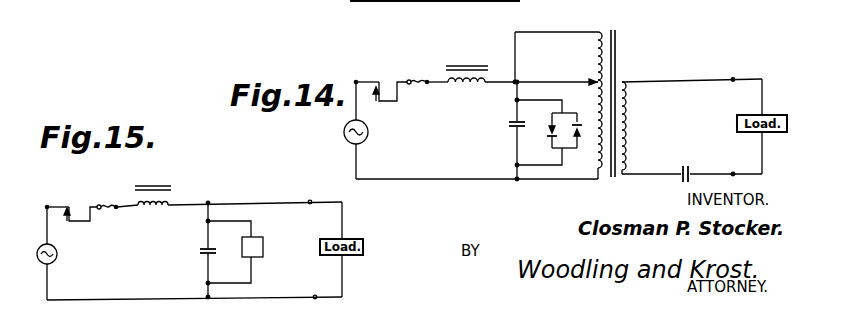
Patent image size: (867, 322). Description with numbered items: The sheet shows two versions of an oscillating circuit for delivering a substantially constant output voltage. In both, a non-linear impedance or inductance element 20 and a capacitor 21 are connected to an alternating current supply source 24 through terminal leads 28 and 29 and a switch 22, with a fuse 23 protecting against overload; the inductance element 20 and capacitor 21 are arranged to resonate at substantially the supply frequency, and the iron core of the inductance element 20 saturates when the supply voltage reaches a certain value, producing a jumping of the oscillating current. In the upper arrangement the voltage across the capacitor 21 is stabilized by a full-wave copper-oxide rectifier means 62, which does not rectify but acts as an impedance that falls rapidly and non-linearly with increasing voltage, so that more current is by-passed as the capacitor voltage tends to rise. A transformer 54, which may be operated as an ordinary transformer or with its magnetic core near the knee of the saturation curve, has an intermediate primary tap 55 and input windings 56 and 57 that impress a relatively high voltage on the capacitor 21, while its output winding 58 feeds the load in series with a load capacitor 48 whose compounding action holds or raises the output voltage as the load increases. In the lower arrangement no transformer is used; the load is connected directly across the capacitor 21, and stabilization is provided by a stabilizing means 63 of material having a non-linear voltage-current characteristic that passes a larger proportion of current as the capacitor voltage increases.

In FIG. 14, the non-linear impedance or inductance element 20 is at (468, 64).
In FIG. 15, the non-linear impedance or inductance element 20 is at (170, 188).
In FIG. 14, the capacitor 21 is at (509, 125).
In FIG. 15, the capacitor 21 is at (200, 251).
In FIG. 14, the switch 22 is at (365, 81).
In FIG. 15, the switch 22 is at (50, 206).
In FIG. 14, the fuse 23 is at (420, 80).
In FIG. 15, the fuse 23 is at (107, 205).
In FIG. 14, the alternating current supply source 24 is at (344, 134).
In FIG. 15, the alternating current supply source 24 is at (57, 257).
In FIG. 14, the terminal lead 28 is at (356, 100).
In FIG. 15, the terminal lead 28 is at (47, 236).
In FIG. 14, the terminal lead 29 is at (356, 170).
In FIG. 15, the terminal lead 29 is at (47, 297).
In FIG. 14, the load capacitor 48 is at (683, 166).
In FIG. 14, the transformer 54 is at (620, 48).
In FIG. 14, the intermediate primary tap 55 is at (594, 79).
In FIG. 14, the input winding 56 is at (596, 101).
In FIG. 14, the input winding 57 is at (597, 37).
In FIG. 14, the output winding 58 is at (636, 113).
In FIG. 14, the copper-oxide rectifier means 62 is at (552, 147).
In FIG. 15, the stabilizing means 63 is at (263, 252).